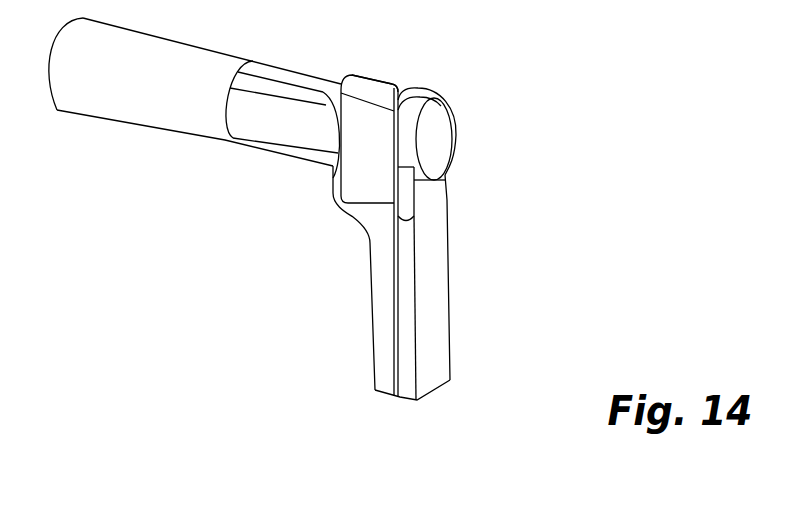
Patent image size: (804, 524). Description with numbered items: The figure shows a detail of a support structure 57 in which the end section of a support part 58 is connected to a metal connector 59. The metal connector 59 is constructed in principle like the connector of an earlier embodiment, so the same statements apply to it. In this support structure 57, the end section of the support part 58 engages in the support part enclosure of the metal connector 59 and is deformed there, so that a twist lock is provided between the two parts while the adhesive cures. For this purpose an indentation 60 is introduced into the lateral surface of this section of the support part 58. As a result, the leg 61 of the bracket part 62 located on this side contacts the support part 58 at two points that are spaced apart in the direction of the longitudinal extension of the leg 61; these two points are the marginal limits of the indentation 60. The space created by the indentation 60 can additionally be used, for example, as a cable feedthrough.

The support structure 57 is at (368, 204).
The support part 58 is at (120, 87).
The metal connector 59 is at (462, 228).
The indentation 60 is at (413, 142).
The leg 61 is at (383, 166).
The bracket part 62 is at (397, 90).